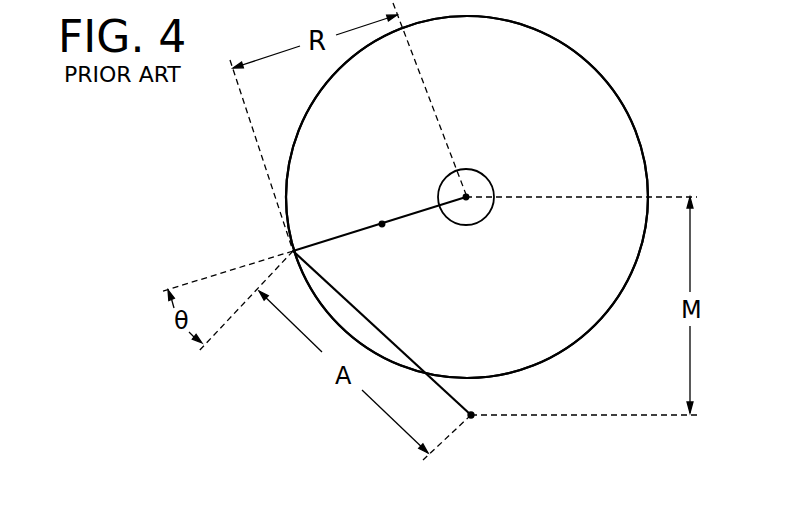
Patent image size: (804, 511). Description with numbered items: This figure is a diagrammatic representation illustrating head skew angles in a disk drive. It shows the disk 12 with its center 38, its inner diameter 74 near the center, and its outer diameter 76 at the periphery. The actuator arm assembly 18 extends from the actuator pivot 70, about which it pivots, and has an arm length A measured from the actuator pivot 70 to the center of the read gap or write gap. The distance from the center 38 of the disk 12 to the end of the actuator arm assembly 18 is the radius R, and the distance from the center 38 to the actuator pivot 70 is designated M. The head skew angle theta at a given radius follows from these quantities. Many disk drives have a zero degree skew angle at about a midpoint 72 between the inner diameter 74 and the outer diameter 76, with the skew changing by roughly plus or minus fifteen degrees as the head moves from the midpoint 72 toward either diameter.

The disk 12 is at (514, 126).
The outer diameter 76 is at (583, 60).
The center 38 is at (487, 213).
The inner diameter 74 is at (478, 225).
The midpoint 72 is at (382, 224).
The actuator arm assembly 18 is at (380, 330).
The actuator pivot 70 is at (471, 415).